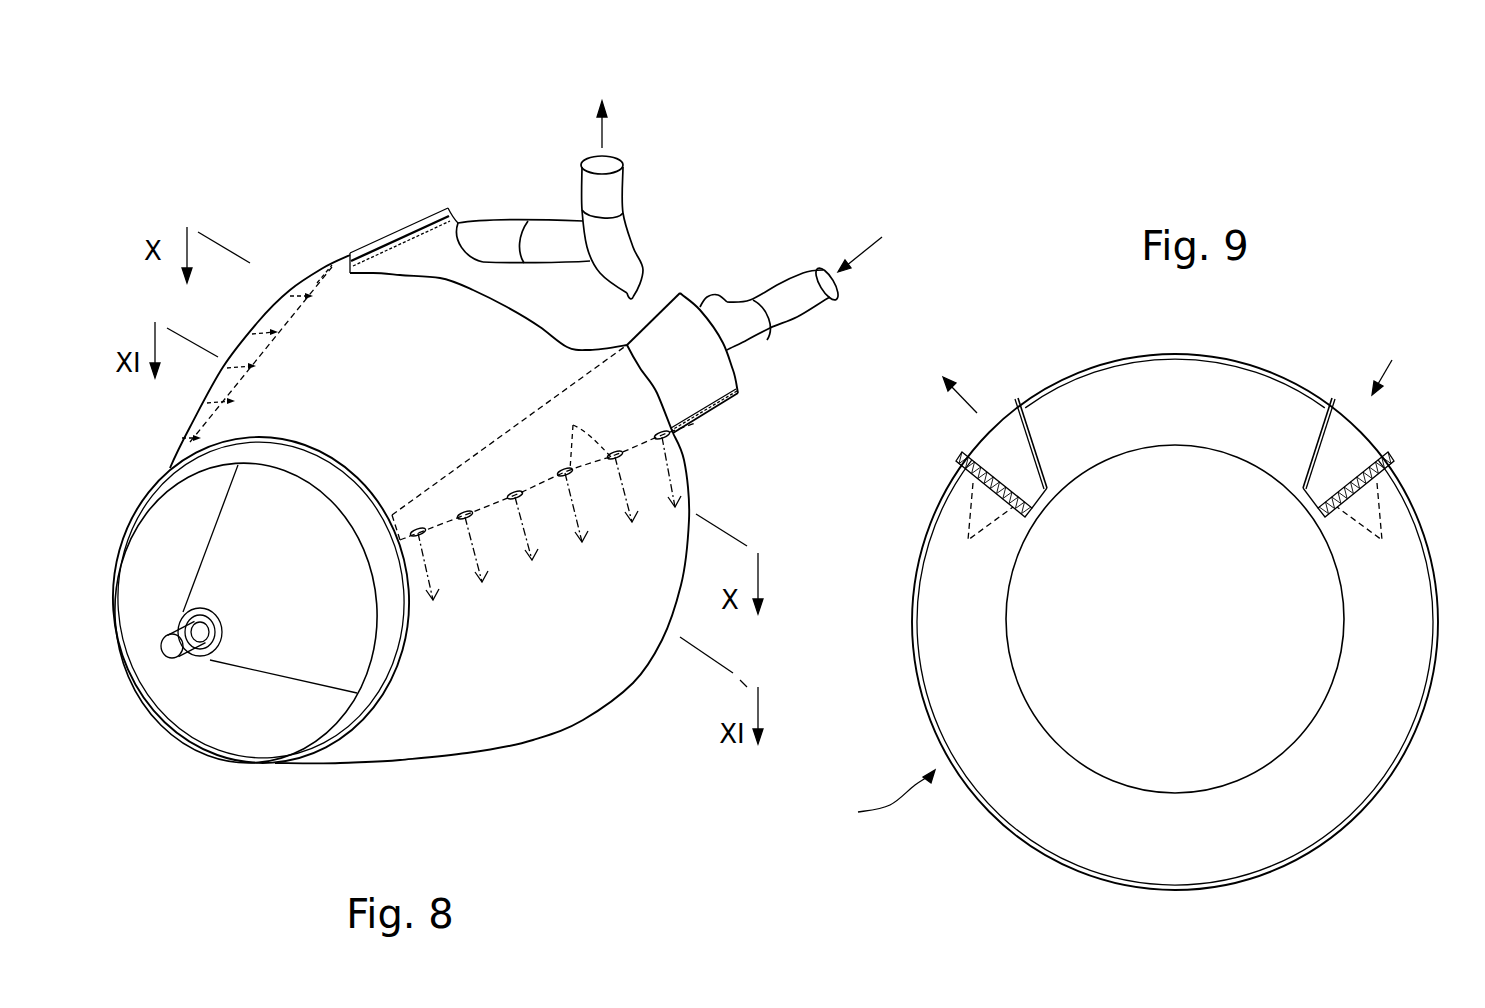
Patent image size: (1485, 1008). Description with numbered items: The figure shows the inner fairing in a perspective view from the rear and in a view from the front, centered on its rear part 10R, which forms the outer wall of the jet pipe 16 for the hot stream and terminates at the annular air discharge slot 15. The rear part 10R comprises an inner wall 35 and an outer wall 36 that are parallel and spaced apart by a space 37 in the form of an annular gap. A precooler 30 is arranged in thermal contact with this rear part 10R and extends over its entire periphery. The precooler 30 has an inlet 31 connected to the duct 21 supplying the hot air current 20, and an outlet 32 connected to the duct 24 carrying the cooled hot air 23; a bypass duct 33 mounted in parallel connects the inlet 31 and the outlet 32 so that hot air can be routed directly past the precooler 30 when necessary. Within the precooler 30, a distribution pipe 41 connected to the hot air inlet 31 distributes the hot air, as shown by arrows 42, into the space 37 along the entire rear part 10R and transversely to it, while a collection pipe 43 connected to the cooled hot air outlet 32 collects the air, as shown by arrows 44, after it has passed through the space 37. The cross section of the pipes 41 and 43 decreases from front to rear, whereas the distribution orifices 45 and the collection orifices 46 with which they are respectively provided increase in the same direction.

In FIG. 8, the rear part of the inner fairing 10R is at (541, 776).
In FIG. 9, the rear part of the inner fairing 10R is at (874, 800).
In FIG. 8, the annular air discharge slot 15 is at (380, 673).
In FIG. 8, the jet pipe 16 is at (167, 570).
In FIG. 8, the hot air current 20 is at (860, 242).
In FIG. 9, the hot air current 20 is at (1371, 364).
In FIG. 8, the duct 21 is at (793, 310).
In FIG. 8, the cooled hot air 23 is at (601, 108).
In FIG. 9, the cooled hot air 23 is at (969, 387).
In FIG. 8, the duct 24 is at (613, 190).
In FIG. 8, the precooler 30 is at (320, 228).
In FIG. 8, the inlet 31 is at (747, 340).
In FIG. 8, the outlet 32 is at (502, 235).
In FIG. 8, the bypass duct 33 is at (718, 305).
In FIG. 9, the inner wall 35 is at (990, 652).
In FIG. 8, the outer wall 36 is at (593, 675).
In FIG. 9, the outer wall 36 is at (1018, 847).
In FIG. 9, the space 37 is at (1330, 843).
In FIG. 8, the distribution pipe 41 is at (695, 400).
In FIG. 9, the distribution pipe 41 is at (1368, 435).
In FIG. 8, the arrows 42 is at (572, 510).
In FIG. 8, the collection pipe 43 is at (413, 247).
In FIG. 9, the collection pipe 43 is at (1022, 448).
In FIG. 8, the arrows 44 is at (210, 407).
In FIG. 8, the distribution orifices 45 is at (585, 433).
In FIG. 9, the distribution orifices 45 is at (1371, 529).
In FIG. 9, the collection orifices 46 is at (976, 532).